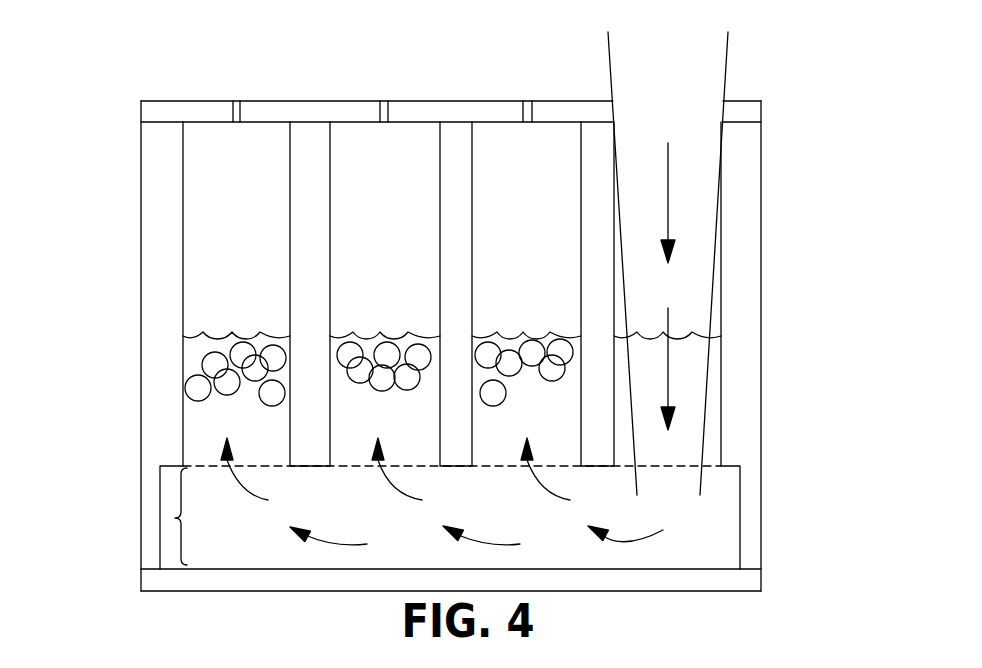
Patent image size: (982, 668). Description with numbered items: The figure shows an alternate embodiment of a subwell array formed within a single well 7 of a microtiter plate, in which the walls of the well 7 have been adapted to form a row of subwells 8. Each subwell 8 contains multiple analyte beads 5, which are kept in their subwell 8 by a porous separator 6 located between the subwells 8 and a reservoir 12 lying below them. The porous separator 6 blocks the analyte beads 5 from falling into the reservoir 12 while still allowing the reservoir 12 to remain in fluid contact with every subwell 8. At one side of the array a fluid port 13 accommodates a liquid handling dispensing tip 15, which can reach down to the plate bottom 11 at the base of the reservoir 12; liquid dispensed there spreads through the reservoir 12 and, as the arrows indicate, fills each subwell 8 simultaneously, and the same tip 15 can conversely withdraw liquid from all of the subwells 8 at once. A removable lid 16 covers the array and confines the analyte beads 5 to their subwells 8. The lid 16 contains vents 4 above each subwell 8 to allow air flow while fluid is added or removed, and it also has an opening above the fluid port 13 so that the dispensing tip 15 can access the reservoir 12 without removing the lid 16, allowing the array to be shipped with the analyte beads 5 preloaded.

The vents 4 is at (522, 112).
The analyte beads 5 is at (217, 363).
The porous separator 6 is at (260, 466).
The well 7 is at (141, 204).
The subwell 8 is at (240, 263).
The plate bottom 11 is at (690, 590).
The reservoir 12 is at (178, 518).
The fluid port 13 is at (712, 453).
The liquid handling dispensing tip 15 is at (612, 61).
The removable lid 16 is at (187, 100).